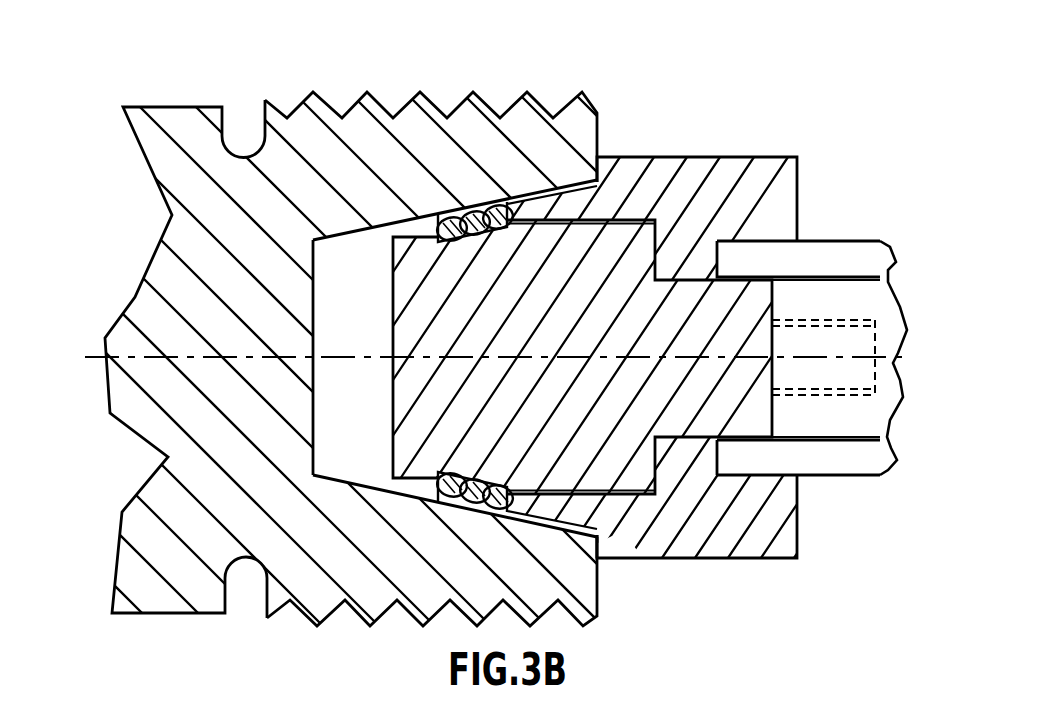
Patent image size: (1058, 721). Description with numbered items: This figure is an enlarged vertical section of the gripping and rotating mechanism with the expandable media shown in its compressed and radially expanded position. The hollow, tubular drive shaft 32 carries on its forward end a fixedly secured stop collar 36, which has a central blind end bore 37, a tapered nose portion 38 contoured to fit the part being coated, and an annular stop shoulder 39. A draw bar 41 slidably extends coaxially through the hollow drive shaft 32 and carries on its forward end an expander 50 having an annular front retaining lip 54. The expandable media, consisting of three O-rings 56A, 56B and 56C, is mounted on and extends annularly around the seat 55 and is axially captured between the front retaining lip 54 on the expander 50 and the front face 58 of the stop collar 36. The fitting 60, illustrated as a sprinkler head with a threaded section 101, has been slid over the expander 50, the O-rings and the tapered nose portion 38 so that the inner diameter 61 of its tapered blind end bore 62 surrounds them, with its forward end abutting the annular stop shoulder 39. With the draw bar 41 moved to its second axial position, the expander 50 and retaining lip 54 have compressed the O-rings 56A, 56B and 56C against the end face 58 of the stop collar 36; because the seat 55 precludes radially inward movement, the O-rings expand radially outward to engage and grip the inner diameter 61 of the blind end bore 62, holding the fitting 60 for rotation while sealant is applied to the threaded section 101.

The fitting 60 is at (129, 285).
The threaded section 101 is at (403, 120).
The inner diameter 61 is at (313, 320).
The tapered blind end bore 62 is at (350, 233).
The tapered nose portion 38 is at (557, 207).
The front face 58 is at (512, 515).
The expander 50 is at (455, 401).
The central blind end bore 37 is at (640, 213).
The annular front retaining lip 54 is at (410, 243).
The O-ring 56A is at (440, 246).
The O-ring 56B is at (463, 207).
The O-ring 56C is at (492, 207).
The seat 55 is at (490, 478).
The stop collar 36 is at (743, 185).
The annular stop shoulder 39 is at (600, 545).
The drive shaft 32 is at (843, 255).
The draw bar 41 is at (884, 418).